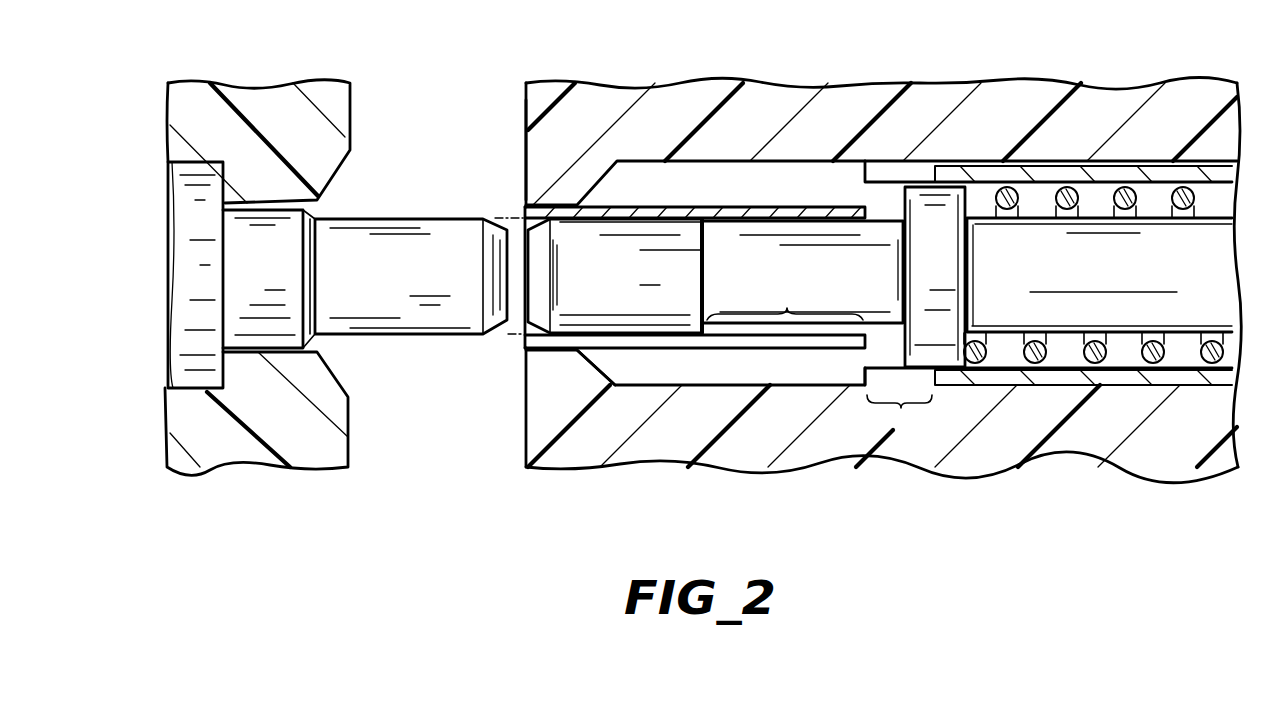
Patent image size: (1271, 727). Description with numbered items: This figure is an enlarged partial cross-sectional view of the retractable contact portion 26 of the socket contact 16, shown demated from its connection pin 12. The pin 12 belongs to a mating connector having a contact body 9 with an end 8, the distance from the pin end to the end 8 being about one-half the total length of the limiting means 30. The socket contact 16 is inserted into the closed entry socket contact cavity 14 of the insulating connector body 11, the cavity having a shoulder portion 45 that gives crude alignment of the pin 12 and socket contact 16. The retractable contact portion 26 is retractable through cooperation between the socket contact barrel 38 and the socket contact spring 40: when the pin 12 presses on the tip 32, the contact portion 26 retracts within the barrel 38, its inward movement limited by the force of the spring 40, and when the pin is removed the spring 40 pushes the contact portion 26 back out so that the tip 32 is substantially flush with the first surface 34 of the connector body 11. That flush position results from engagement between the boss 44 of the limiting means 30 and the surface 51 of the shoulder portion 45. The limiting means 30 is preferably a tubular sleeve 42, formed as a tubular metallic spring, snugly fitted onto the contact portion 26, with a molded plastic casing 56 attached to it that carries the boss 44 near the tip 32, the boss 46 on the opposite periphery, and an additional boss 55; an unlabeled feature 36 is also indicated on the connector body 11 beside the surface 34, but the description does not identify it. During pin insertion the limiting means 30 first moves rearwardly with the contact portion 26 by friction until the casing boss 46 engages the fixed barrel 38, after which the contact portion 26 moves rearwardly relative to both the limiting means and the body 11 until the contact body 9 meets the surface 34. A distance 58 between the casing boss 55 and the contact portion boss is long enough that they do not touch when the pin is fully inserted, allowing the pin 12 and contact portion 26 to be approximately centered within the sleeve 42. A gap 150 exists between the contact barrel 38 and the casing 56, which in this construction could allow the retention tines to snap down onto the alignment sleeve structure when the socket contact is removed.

The end of contact body 8 is at (353, 417).
The contact body 9 is at (272, 415).
The connector body 11 is at (960, 430).
The connection pin 12 is at (397, 262).
The socket contact cavity 14 is at (722, 392).
The socket contact 16 is at (999, 262).
The retractable contact portion 26 is at (580, 287).
The limiting means 30 is at (702, 192).
The tip 32 is at (525, 290).
The first surface 34 is at (524, 112).
The housing end face 36 is at (527, 173).
The socket contact barrel 38 is at (1125, 172).
The socket contact spring 40 is at (1157, 378).
The tubular sleeve 42 is at (816, 342).
The boss 44 is at (617, 190).
The shoulder portion 45 is at (563, 368).
The boss 46 is at (875, 215).
The surface 51 is at (610, 368).
The additional boss 55 is at (895, 182).
The molded plastic casing 56 is at (795, 188).
The distance 58 is at (785, 302).
The gap 150 is at (898, 399).